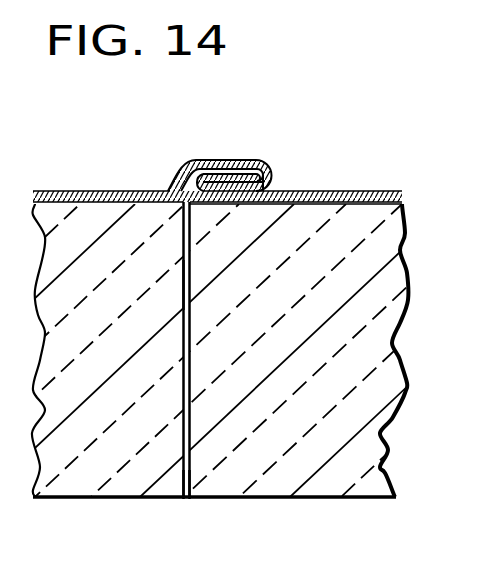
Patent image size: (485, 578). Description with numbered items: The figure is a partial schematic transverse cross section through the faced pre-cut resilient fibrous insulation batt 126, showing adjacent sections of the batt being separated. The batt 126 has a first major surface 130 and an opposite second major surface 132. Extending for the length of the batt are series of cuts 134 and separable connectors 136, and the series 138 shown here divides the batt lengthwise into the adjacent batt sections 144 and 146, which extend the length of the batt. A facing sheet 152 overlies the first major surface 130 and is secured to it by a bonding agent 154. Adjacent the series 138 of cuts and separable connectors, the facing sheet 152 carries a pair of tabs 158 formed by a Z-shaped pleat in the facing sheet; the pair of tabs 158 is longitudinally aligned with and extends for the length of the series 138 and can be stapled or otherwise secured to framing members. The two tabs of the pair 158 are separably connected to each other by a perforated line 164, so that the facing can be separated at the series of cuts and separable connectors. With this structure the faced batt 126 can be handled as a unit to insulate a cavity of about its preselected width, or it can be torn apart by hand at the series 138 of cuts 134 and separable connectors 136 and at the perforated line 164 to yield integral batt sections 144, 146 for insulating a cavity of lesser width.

The faced pre-cut resilient fibrous insulation batt 126 is at (282, 116).
The first major surface 130 is at (105, 191).
The second major surface 132 is at (290, 498).
The cuts 134 is at (190, 387).
The separable connectors 136 is at (183, 286).
The series of cuts and separable connectors 138 is at (185, 499).
The batt section 144 is at (302, 337).
The batt section 146 is at (128, 333).
The facing sheet 152 is at (306, 192).
The bonding agent 154 is at (338, 212).
The pair of tabs 158 is at (238, 156).
The perforated line 164 is at (271, 178).